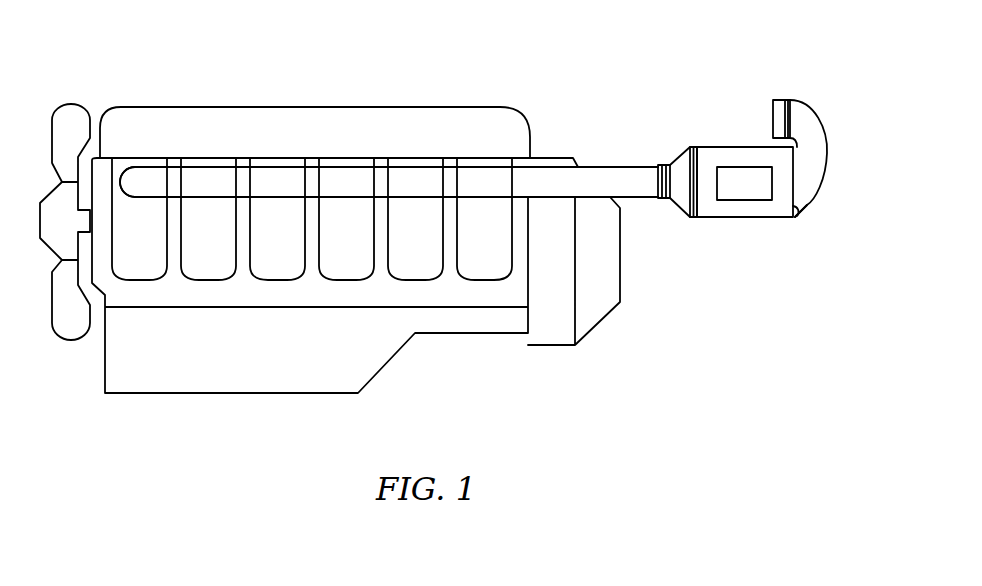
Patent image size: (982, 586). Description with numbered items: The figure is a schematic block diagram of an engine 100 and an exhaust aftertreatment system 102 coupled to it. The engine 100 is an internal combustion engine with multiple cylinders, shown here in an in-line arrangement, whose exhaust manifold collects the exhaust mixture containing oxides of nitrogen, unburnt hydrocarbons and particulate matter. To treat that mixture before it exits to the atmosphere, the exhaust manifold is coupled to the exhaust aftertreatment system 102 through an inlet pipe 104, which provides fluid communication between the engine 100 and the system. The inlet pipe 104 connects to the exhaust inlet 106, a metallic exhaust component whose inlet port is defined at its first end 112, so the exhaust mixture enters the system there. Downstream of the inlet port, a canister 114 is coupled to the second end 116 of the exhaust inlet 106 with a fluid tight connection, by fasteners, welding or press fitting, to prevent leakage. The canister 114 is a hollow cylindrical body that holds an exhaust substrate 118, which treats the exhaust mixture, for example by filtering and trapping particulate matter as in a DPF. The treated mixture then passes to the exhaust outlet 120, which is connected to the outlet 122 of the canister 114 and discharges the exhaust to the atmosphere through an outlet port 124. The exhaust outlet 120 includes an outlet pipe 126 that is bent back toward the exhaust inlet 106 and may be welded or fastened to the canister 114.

The engine 100 is at (357, 107).
The exhaust aftertreatment system 102 is at (714, 84).
The inlet pipe 104 is at (598, 167).
The exhaust inlet 106 is at (688, 147).
The first end 112 is at (667, 167).
The canister 114 is at (747, 218).
The second end 116 is at (693, 218).
The exhaust substrate 118 is at (763, 193).
The exhaust outlet 120 is at (815, 202).
The outlet 122 is at (795, 217).
The outlet port 124 is at (773, 125).
The outlet pipe 126 is at (827, 157).